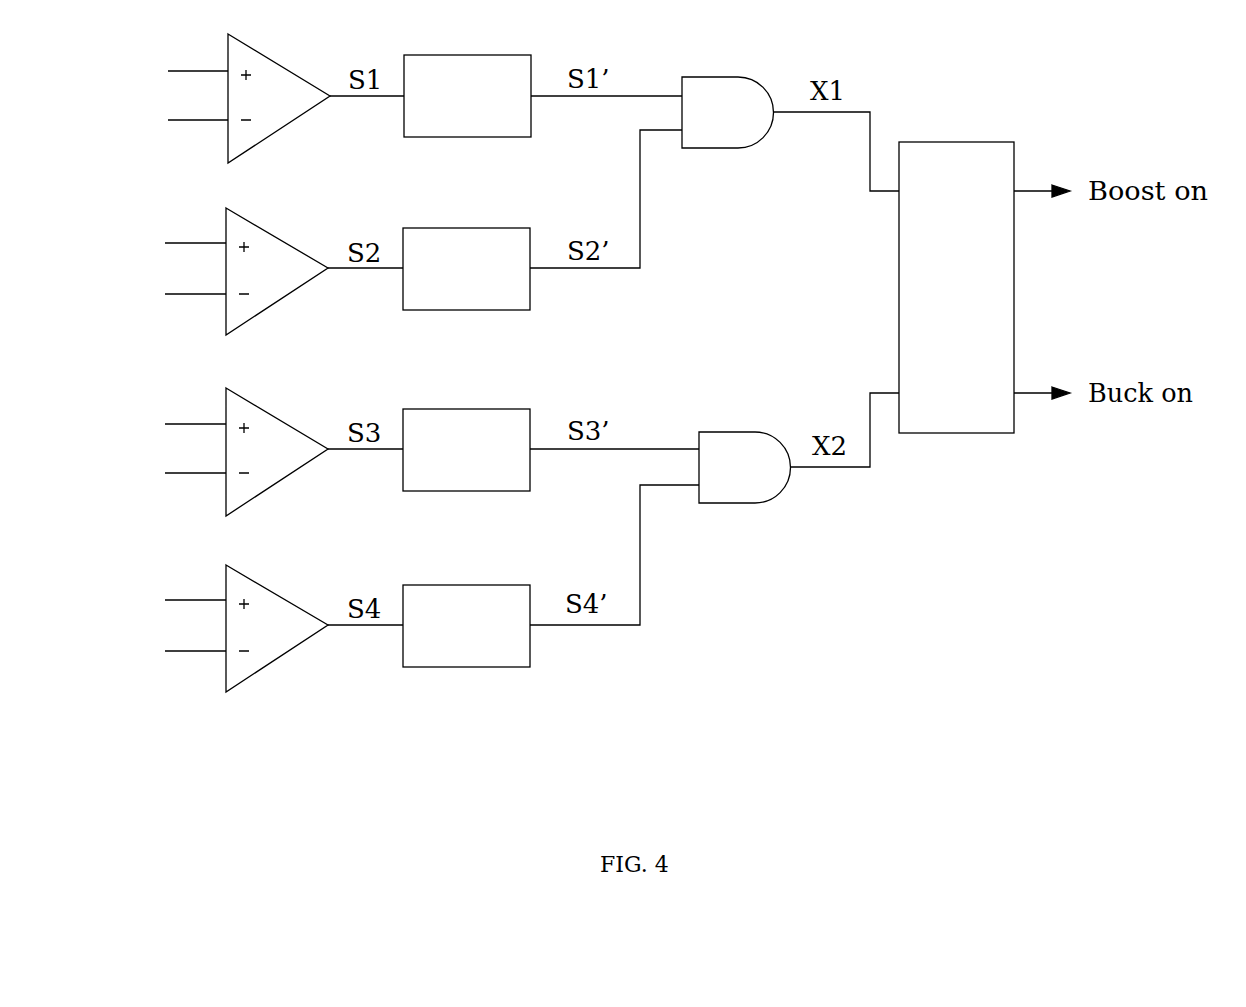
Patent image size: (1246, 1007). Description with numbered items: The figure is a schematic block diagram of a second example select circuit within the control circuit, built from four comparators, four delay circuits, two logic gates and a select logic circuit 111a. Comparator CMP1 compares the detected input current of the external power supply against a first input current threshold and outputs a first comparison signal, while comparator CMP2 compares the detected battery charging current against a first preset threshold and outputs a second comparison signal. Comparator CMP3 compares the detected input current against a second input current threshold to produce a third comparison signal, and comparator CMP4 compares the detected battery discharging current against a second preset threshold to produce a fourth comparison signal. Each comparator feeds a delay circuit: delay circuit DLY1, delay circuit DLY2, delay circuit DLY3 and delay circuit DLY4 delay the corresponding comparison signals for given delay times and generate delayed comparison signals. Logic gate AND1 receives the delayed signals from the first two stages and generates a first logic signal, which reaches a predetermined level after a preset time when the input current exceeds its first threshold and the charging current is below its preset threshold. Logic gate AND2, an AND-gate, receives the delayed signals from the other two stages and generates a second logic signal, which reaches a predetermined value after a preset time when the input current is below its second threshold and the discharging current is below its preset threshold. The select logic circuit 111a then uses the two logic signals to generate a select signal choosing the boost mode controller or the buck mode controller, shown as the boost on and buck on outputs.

The select logic circuit 111a is at (985, 382).
The comparator CMP1 is at (308, 110).
The comparator CMP2 is at (307, 282).
The comparator CMP3 is at (307, 463).
The comparator CMP4 is at (307, 639).
The delay circuit DLY1 is at (498, 111).
The delay circuit DLY2 is at (497, 286).
The delay circuit DLY3 is at (497, 461).
The delay circuit DLY4 is at (503, 636).
The logic gate AND1 is at (758, 125).
The logic gate AND2 is at (771, 480).